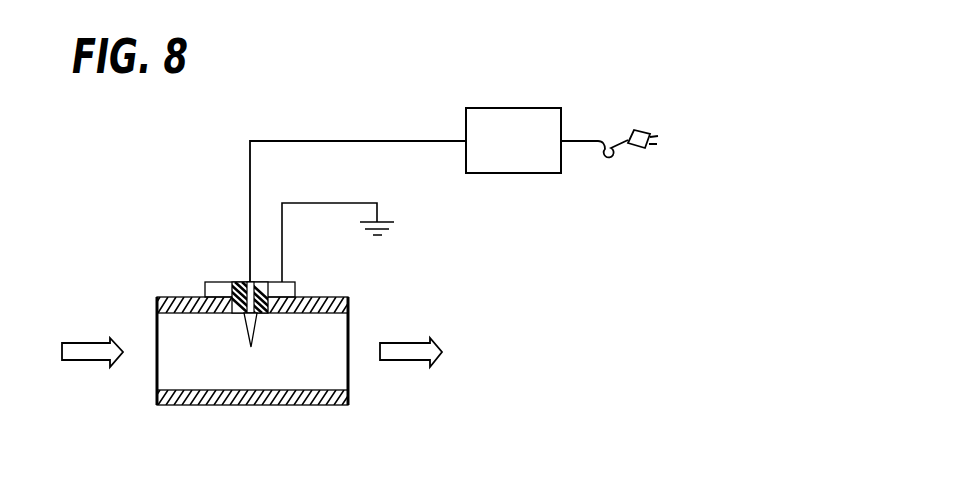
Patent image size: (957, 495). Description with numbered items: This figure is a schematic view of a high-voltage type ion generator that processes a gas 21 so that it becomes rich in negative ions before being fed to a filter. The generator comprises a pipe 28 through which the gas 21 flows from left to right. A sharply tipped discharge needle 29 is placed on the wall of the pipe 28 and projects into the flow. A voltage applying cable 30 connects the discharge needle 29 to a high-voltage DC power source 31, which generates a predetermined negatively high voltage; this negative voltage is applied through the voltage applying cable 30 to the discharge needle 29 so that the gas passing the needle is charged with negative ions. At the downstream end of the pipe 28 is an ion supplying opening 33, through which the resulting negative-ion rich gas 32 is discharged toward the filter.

The gas 21 is at (82, 342).
The pipe 28 is at (312, 405).
The discharge needle 29 is at (250, 347).
The voltage applying cable 30 is at (357, 140).
The high-voltage DC power source 31 is at (540, 108).
The negative-ion rich gas 32 is at (402, 342).
The ion supplying opening 33 is at (349, 355).